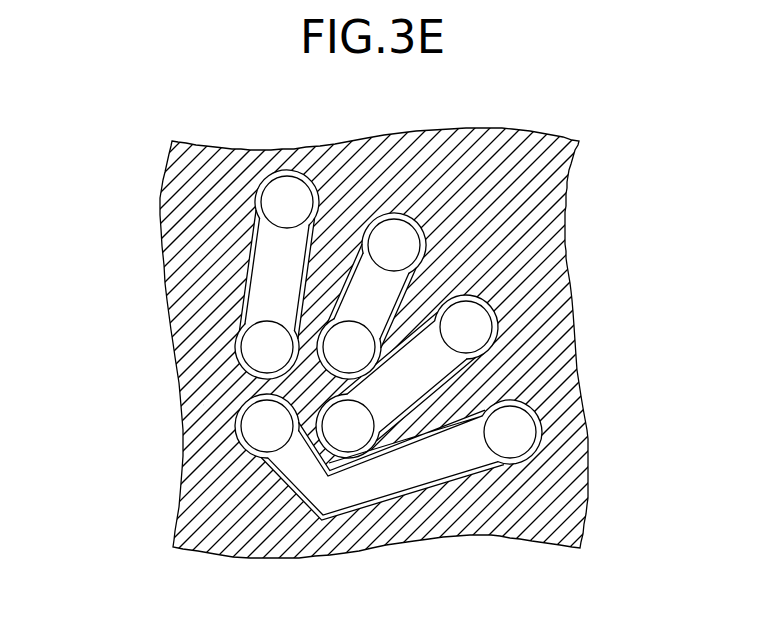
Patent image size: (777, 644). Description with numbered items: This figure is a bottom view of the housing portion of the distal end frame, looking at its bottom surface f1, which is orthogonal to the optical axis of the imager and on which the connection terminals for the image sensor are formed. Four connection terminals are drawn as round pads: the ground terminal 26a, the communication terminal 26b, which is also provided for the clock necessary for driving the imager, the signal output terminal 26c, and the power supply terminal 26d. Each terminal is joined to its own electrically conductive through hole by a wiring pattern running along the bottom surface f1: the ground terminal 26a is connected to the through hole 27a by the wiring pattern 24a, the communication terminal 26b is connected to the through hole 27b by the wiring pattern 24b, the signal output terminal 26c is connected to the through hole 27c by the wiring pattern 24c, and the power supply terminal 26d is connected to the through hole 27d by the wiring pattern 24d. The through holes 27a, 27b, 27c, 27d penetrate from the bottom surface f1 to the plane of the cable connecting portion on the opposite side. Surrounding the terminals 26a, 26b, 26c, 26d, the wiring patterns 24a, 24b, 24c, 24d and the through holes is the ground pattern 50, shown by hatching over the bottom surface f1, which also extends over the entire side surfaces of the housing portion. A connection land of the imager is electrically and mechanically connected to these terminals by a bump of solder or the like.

The wiring pattern 24a is at (305, 472).
The wiring pattern 24b is at (410, 375).
The wiring pattern 24c is at (373, 290).
The wiring pattern 24d is at (273, 273).
The ground terminal 26a is at (262, 425).
The communication terminal 26b is at (348, 427).
The signal output terminal 26c is at (350, 347).
The power supply terminal 26d is at (262, 347).
The electrical conductive through hole 27a is at (509, 433).
The electrical conductive through hole 27b is at (467, 327).
The electrical conductive through hole 27c is at (394, 244).
The electrical conductive through hole 27d is at (287, 205).
The ground pattern 50 is at (193, 368).
The bottom surface f1 is at (203, 405).